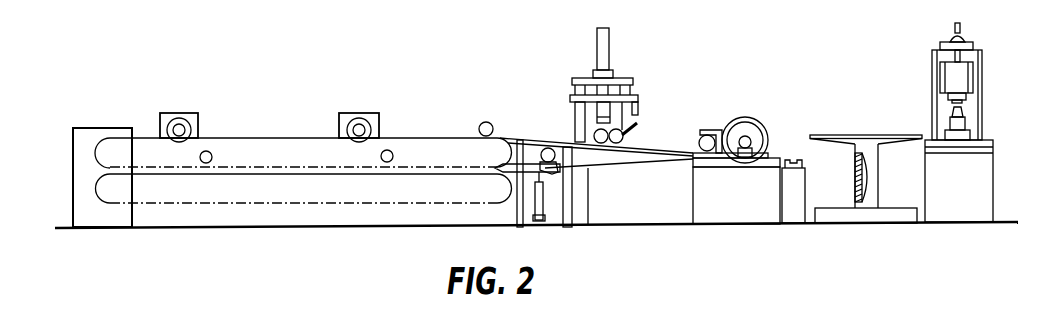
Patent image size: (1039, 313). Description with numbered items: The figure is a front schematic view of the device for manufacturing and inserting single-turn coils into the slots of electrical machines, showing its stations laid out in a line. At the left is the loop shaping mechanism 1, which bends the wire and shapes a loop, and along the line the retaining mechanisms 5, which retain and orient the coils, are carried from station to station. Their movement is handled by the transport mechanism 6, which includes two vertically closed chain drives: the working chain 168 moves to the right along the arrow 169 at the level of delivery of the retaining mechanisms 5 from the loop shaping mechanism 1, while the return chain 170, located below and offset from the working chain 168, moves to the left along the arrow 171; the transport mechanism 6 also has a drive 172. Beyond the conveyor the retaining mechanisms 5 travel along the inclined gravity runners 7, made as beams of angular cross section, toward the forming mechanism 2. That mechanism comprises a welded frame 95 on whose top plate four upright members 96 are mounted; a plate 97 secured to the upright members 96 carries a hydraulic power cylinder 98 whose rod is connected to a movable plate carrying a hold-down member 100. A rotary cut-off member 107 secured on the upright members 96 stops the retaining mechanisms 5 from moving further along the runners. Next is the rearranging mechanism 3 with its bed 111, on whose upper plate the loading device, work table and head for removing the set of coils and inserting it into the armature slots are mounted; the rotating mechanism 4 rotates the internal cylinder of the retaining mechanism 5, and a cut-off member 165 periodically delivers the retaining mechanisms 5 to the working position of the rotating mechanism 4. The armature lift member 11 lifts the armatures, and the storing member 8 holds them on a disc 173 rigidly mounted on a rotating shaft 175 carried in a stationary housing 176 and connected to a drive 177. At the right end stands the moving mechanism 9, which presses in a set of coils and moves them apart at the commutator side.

The loop shaping mechanism 1 is at (322, 103).
The forming mechanism 2 is at (611, 86).
The rearranging mechanism 3 is at (763, 112).
The rotating mechanism 4 is at (524, 232).
The retaining mechanisms 5 is at (388, 152).
The transport mechanism 6 is at (303, 176).
The inclined gravity runners 7 is at (635, 156).
The storing member 8 is at (879, 175).
The moving mechanism 9 is at (994, 118).
The armature lift member 11 is at (811, 228).
The welded frame 95 is at (553, 200).
The upright members 96 is at (581, 132).
The plate 97 is at (633, 80).
The hydraulic power cylinder 98 is at (605, 53).
The hold-down member 100 is at (630, 120).
The rotary cut-off member 107 is at (634, 127).
The bed 111 is at (740, 167).
The cut-off member 165 is at (530, 138).
The working chain 168 is at (143, 150).
The arrow 169 is at (288, 128).
The return chain 170 is at (127, 207).
The arrow 171 is at (406, 153).
The drive 172 is at (85, 188).
The disc 173 is at (823, 135).
The rotating shaft 175 is at (870, 180).
The stationary housing 176 is at (856, 181).
The drive 177 is at (900, 223).